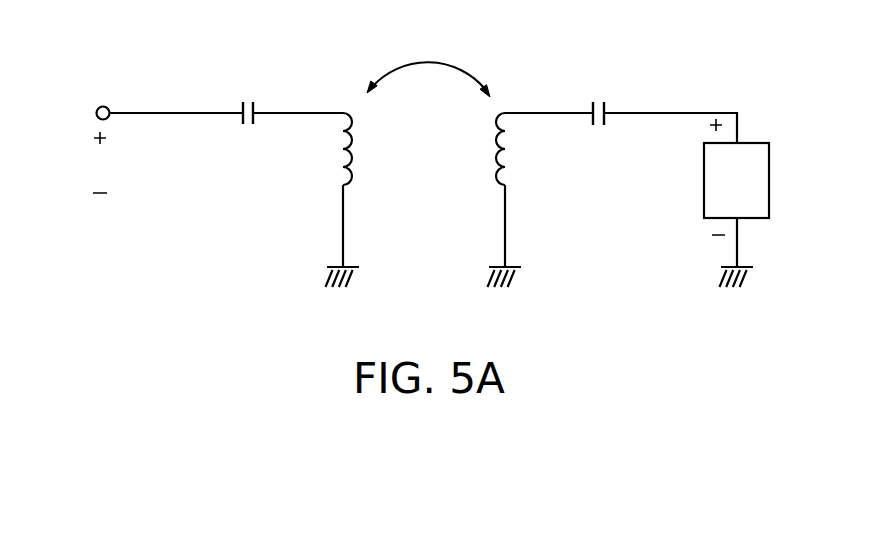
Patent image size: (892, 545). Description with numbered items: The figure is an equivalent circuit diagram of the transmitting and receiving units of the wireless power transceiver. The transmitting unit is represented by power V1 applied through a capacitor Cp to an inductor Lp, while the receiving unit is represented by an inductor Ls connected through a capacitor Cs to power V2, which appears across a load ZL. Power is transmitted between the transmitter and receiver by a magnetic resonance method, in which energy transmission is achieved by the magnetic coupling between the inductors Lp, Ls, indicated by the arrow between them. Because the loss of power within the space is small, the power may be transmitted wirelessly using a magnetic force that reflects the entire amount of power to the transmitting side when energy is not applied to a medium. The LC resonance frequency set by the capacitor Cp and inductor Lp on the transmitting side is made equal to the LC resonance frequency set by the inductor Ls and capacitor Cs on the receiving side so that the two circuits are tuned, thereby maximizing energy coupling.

The power V1 is at (104, 150).
The capacitor Cp is at (252, 96).
The inductor Lp is at (327, 149).
The inductor Ls is at (518, 149).
The capacitor Cs is at (598, 98).
The power V2 is at (694, 177).
The load impedance ZL is at (736, 180).